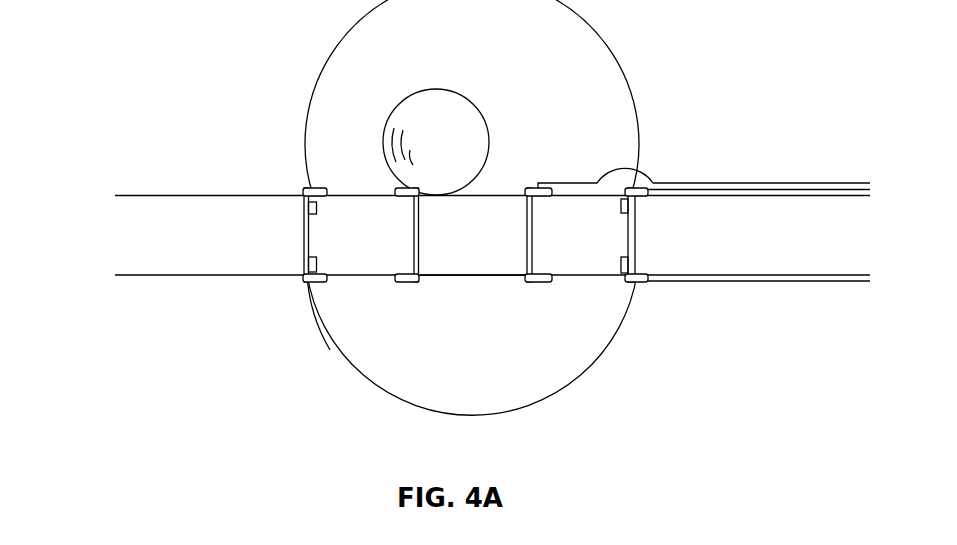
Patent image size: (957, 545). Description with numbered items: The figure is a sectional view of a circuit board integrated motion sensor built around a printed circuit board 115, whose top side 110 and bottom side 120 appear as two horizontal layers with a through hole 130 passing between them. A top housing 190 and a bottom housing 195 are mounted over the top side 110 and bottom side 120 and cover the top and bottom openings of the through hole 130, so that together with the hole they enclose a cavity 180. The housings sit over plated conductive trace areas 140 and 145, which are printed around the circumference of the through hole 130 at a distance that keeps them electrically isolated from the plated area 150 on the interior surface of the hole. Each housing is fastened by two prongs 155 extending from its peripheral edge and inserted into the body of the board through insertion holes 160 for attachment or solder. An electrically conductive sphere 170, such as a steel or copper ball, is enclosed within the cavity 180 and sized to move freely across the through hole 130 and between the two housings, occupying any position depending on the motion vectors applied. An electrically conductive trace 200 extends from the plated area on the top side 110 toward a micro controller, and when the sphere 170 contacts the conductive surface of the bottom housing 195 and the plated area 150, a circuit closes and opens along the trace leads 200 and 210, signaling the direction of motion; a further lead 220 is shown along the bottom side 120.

The top side 110 is at (182, 195).
The printed circuit board 115 is at (117, 239).
The bottom side 120 is at (182, 275).
The through hole 130 is at (471, 275).
The plated conductive trace area 140 is at (306, 187).
The plated conductive trace area 145 is at (306, 283).
The plated area 150 is at (406, 283).
The prong 155 is at (318, 206).
The insertion hole 160 is at (301, 242).
The electrically conductive sphere 170 is at (490, 146).
The cavity 180 is at (373, 368).
The top housing 190 is at (492, 80).
The bottom housing 195 is at (577, 382).
The electrically conductive trace 200 is at (810, 184).
The trace lead 210 is at (742, 184).
The bottom sheet 220 is at (807, 281).